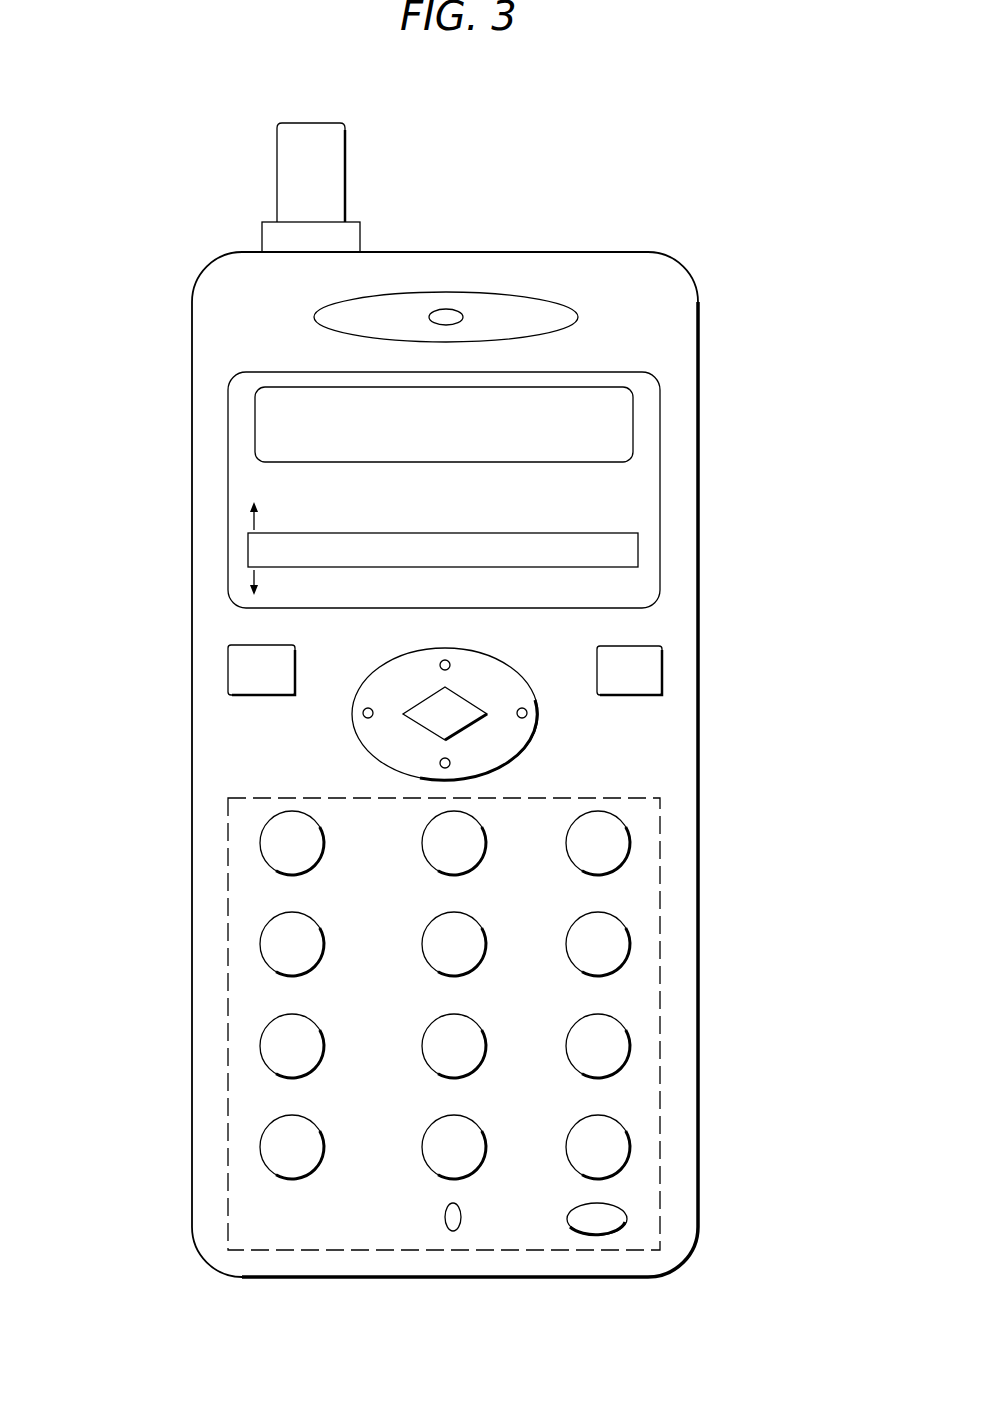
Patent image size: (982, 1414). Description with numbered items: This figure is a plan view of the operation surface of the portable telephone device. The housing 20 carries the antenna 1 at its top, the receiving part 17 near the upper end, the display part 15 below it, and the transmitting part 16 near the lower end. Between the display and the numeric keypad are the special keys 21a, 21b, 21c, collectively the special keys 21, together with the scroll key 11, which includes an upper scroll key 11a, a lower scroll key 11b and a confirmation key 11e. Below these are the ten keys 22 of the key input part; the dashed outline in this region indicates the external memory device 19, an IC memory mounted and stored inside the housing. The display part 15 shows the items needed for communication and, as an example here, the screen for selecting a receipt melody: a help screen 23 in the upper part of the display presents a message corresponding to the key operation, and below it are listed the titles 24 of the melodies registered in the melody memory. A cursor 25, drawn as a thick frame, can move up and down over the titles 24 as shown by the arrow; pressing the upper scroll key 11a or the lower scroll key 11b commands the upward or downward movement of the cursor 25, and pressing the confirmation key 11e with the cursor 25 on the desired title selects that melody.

The antenna 1 is at (277, 175).
The scroll key 11 is at (98, 712).
The upper scroll key 11a is at (438, 670).
The lower scroll key 11b is at (438, 767).
The confirmation key 11e is at (430, 727).
The display part 15 is at (662, 473).
The transmitting part 16 is at (445, 1215).
The receiving part 17 is at (446, 309).
The external memory device 19 is at (228, 1118).
The housing 20 is at (590, 253).
The special keys 21 is at (805, 592).
The special key 21a is at (295, 662).
The special key 21b is at (662, 668).
The special key 21c is at (628, 1213).
The ten keys 22 is at (245, 952).
The help screen 23 is at (255, 430).
The titles 24 is at (258, 469).
The cursor 25 is at (248, 550).